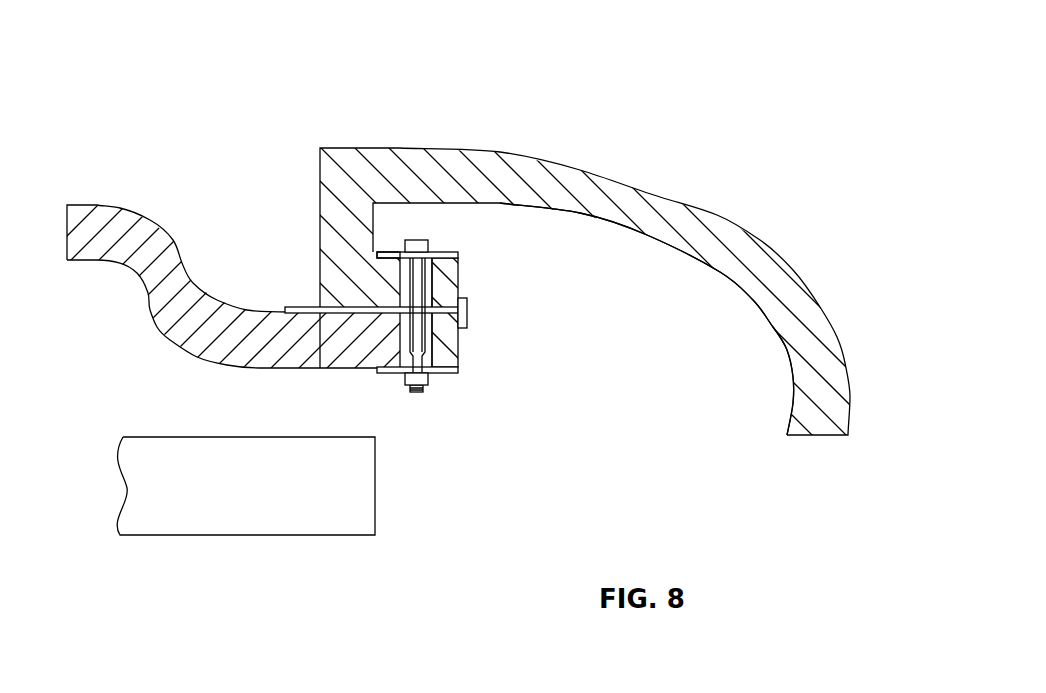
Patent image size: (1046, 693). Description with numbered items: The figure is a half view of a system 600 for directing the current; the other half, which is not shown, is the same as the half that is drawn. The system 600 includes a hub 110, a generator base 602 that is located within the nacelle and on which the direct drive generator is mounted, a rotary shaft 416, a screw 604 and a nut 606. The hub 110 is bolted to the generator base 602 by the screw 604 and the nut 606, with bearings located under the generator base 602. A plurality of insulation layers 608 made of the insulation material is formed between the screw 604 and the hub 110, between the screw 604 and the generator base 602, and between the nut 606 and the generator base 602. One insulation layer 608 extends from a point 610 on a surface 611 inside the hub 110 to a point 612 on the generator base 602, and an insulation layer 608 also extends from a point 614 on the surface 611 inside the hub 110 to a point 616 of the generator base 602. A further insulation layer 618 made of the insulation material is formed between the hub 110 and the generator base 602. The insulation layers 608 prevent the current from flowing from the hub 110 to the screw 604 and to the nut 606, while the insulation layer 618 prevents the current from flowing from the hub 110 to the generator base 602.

The system for directing the current 600 is at (722, 60).
The hub 110 is at (715, 217).
The surface inside hub 611 is at (773, 327).
The generator base 602 is at (152, 222).
The screw 604 is at (415, 242).
The nut 606 is at (425, 378).
The insulation layers 608 is at (395, 253).
The point on surface inside hub 610 is at (390, 254).
The point on generator base 612 is at (377, 368).
The point on surface inside hub 614 is at (458, 256).
The point of generator base 616 is at (458, 368).
The insulation layer 618 is at (467, 314).
The rotary shaft 416 is at (265, 535).